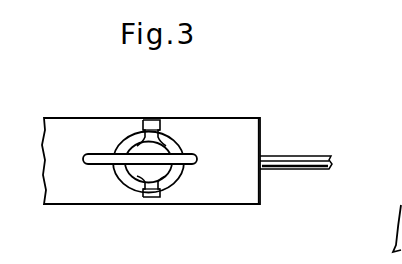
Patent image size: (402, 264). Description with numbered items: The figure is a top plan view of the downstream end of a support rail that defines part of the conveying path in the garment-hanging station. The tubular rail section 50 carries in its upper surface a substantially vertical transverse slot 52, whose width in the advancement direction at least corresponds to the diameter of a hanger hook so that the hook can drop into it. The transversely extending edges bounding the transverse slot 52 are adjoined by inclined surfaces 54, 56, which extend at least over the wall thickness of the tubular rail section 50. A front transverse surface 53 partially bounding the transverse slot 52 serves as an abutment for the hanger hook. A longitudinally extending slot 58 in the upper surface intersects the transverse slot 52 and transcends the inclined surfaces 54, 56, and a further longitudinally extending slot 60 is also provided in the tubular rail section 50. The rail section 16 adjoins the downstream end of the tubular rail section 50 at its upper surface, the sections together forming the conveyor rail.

The rail section 16 is at (284, 156).
The tubular rail section 50 is at (176, 117).
The transverse slot 52 is at (143, 193).
The front transverse surface 53 is at (150, 130).
The inclined surface 54 is at (118, 142).
The inclined surface 56 is at (174, 144).
The longitudinally extending slot 58 is at (95, 165).
The longitudinally extending slot 60 is at (130, 151).